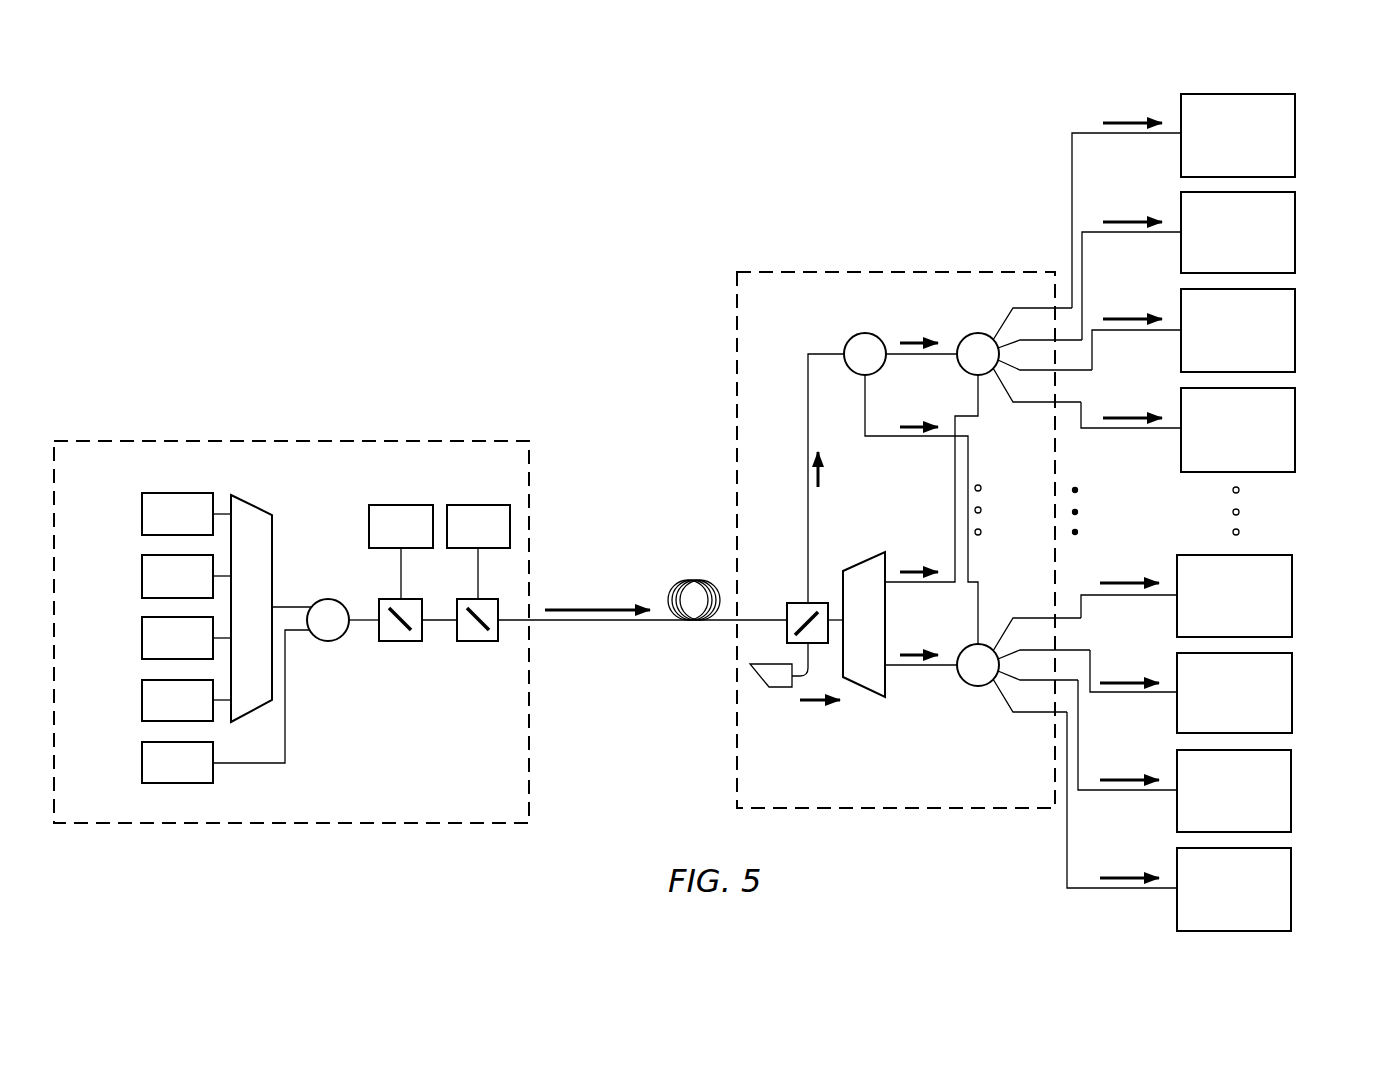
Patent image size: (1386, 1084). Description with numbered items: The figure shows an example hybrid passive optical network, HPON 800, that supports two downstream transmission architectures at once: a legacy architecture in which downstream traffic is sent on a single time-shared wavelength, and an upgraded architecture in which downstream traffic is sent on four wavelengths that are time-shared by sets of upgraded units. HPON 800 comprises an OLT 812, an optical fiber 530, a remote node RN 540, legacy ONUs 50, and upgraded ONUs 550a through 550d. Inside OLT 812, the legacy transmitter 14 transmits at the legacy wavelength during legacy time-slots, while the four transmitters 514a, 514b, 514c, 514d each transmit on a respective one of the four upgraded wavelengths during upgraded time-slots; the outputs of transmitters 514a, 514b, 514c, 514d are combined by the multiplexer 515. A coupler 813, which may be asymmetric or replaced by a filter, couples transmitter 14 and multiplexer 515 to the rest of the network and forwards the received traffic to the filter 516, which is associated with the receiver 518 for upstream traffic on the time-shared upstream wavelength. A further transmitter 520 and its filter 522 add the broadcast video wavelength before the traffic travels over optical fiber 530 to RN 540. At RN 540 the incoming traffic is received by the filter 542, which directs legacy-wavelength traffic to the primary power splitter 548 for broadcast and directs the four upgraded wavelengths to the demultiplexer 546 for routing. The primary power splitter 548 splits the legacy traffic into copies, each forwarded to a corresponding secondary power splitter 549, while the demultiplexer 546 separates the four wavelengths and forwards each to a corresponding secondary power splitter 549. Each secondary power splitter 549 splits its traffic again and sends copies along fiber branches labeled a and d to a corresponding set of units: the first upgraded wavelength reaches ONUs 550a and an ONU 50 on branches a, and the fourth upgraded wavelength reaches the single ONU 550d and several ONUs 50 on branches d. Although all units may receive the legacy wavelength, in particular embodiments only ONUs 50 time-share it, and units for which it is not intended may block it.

The HPON 800 is at (470, 210).
The OLT 812 is at (248, 437).
The transmitter 514a is at (142, 510).
The transmitter 514b is at (142, 572).
The transmitter 514c is at (142, 646).
The transmitter 514d is at (142, 706).
The transmitter 14 is at (142, 768).
The multiplexer 515 is at (250, 500).
The coupler 813 is at (325, 642).
The filter 516 is at (404, 641).
The receiver 518 is at (406, 505).
The transmitter 520 is at (483, 505).
The filter 522 is at (482, 641).
The optical fiber 530 is at (684, 580).
The RN 540 is at (918, 268).
The filter 542 is at (792, 603).
The demultiplexer 546 is at (862, 556).
The primary power splitter 548 is at (858, 333).
The secondary power splitter 549 is at (970, 333).
The ONU 550a is at (1295, 133).
The ONU 550d is at (1291, 895).
The ONU 50 is at (1295, 232).